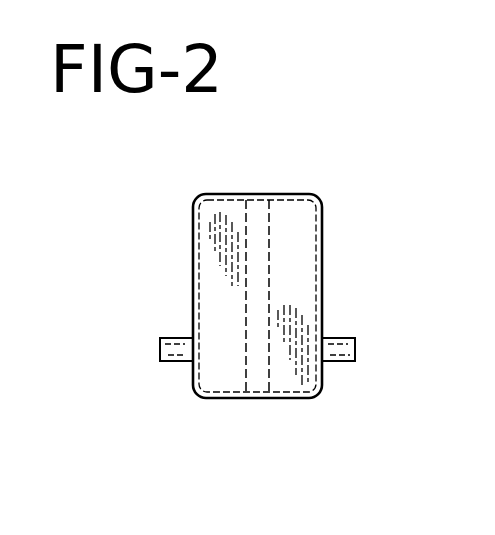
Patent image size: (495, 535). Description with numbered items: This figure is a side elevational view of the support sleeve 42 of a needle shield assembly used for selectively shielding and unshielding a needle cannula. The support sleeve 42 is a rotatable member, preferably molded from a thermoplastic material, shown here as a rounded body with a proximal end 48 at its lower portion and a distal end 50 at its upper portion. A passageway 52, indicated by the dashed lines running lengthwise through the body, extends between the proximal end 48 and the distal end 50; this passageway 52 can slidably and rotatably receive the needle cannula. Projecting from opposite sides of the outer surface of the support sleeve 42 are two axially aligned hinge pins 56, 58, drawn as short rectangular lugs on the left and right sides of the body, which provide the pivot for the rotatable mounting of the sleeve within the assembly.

The support sleeve 42 is at (338, 189).
The proximal end 48 is at (215, 398).
The distal end 50 is at (232, 196).
The passageway 52 is at (266, 370).
The hinge pin 56 is at (160, 350).
The hinge pin 58 is at (355, 345).